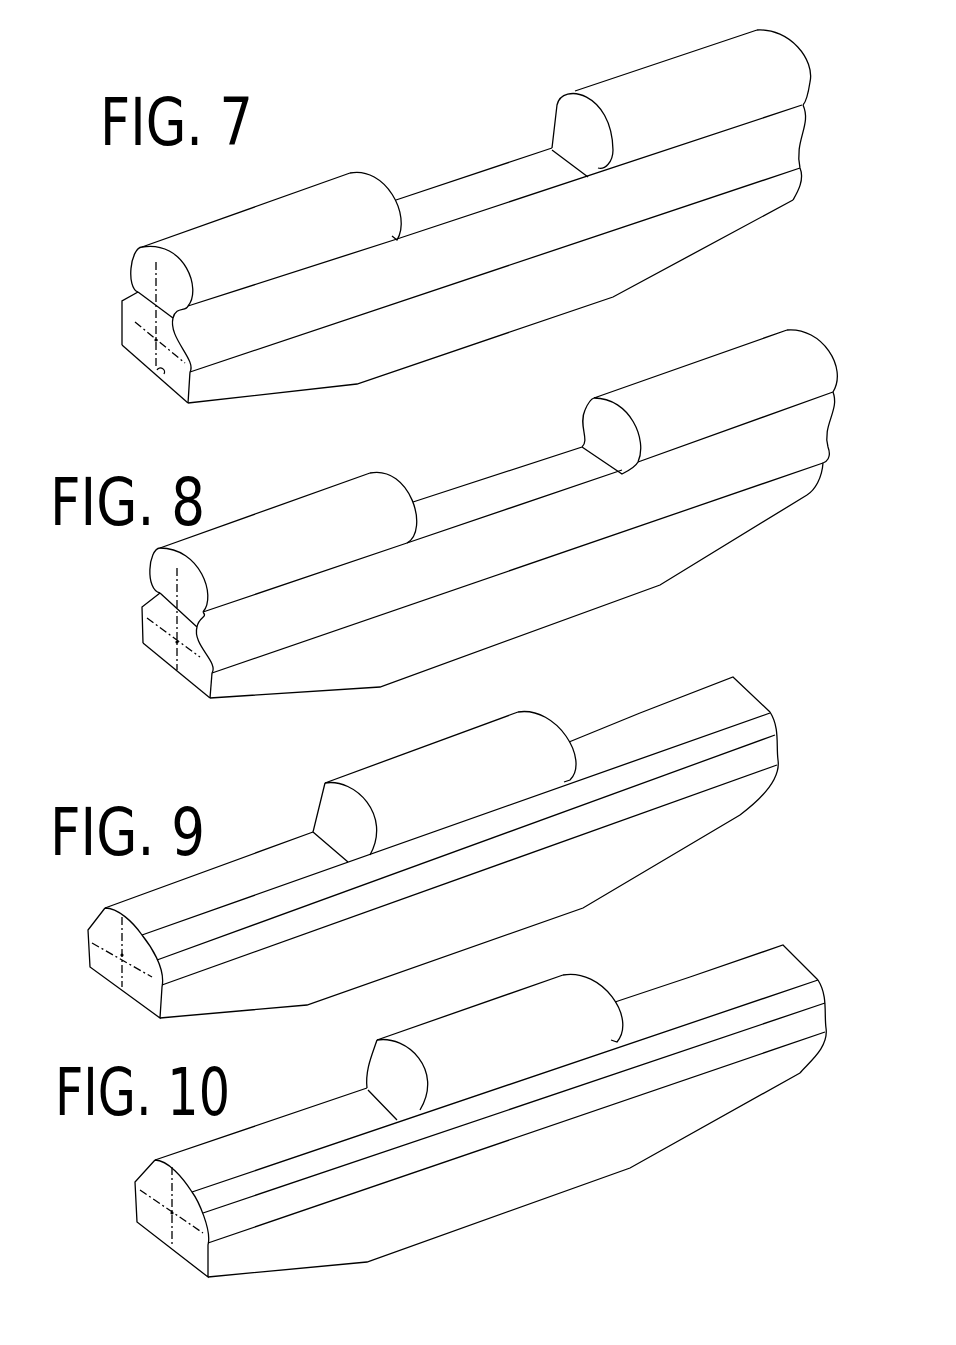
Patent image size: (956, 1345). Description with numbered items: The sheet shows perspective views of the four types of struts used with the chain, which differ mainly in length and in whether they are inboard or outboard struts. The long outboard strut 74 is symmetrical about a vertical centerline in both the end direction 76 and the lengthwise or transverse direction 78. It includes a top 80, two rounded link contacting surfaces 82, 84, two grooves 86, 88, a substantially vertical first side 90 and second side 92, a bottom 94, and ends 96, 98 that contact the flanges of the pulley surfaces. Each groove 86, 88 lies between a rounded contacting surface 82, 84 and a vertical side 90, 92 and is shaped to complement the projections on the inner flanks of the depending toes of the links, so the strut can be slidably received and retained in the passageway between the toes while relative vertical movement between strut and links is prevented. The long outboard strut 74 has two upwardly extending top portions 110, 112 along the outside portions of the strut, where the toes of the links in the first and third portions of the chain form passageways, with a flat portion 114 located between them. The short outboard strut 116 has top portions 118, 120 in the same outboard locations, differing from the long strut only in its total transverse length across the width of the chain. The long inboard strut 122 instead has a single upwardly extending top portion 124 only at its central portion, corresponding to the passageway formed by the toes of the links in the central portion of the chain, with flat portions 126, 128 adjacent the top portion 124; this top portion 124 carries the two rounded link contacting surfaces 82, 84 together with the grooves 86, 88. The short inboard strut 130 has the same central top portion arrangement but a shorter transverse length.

In FIG. 7, the long outboard strut 74 is at (376, 357).
In FIG. 7, the end direction 76 is at (165, 383).
In FIG. 7, the lengthwise direction 78 is at (127, 327).
In FIG. 7, the top 80 is at (258, 230).
In FIG. 8, the top 80 is at (243, 546).
In FIG. 7, the rounded link contacting surface 82 is at (187, 283).
In FIG. 9, the rounded link contacting surface 82 is at (547, 757).
In FIG. 10, the rounded link contacting surface 82 is at (593, 1018).
In FIG. 7, the rounded link contacting surface 84 is at (125, 250).
In FIG. 9, the rounded link contacting surface 84 is at (363, 767).
In FIG. 10, the rounded link contacting surface 84 is at (428, 1015).
In FIG. 7, the groove 86 is at (242, 335).
In FIG. 8, the groove 86 is at (300, 620).
In FIG. 9, the groove 86 is at (445, 837).
In FIG. 10, the groove 86 is at (508, 1088).
In FIG. 7, the groove 88 is at (135, 287).
In FIG. 8, the groove 88 is at (150, 585).
In FIG. 9, the groove 88 is at (318, 820).
In FIG. 10, the groove 88 is at (363, 1078).
In FIG. 7, the first side 90 is at (463, 322).
In FIG. 7, the second side 92 is at (116, 322).
In FIG. 8, the second side 92 is at (134, 627).
In FIG. 7, the bottom 94 is at (140, 370).
In FIG. 8, the bottom 94 is at (160, 662).
In FIG. 7, the end 96 is at (192, 400).
In FIG. 8, the end 96 is at (205, 678).
In FIG. 7, the end 98 is at (802, 168).
In FIG. 7, the top portion 110 is at (348, 190).
In FIG. 7, the top portion 112 is at (640, 85).
In FIG. 7, the flat portion 114 is at (470, 183).
In FIG. 8, the short outboard strut 116 is at (505, 611).
In FIG. 8, the top portion 118 is at (318, 508).
In FIG. 8, the top portion 120 is at (660, 390).
In FIG. 9, the long inboard strut 122 is at (424, 933).
In FIG. 9, the top portion 124 is at (452, 757).
In FIG. 10, the top portion 124 is at (503, 1015).
In FIG. 9, the flat portion 126 is at (218, 875).
In FIG. 10, the flat portion 126 is at (253, 1143).
In FIG. 9, the flat portion 128 is at (663, 720).
In FIG. 10, the flat portion 128 is at (707, 988).
In FIG. 10, the short inboard strut 130 is at (481, 1191).